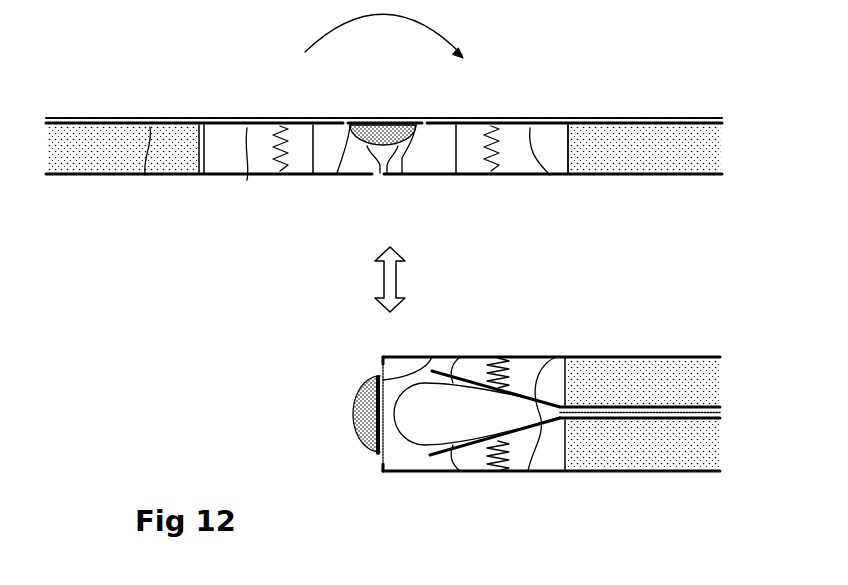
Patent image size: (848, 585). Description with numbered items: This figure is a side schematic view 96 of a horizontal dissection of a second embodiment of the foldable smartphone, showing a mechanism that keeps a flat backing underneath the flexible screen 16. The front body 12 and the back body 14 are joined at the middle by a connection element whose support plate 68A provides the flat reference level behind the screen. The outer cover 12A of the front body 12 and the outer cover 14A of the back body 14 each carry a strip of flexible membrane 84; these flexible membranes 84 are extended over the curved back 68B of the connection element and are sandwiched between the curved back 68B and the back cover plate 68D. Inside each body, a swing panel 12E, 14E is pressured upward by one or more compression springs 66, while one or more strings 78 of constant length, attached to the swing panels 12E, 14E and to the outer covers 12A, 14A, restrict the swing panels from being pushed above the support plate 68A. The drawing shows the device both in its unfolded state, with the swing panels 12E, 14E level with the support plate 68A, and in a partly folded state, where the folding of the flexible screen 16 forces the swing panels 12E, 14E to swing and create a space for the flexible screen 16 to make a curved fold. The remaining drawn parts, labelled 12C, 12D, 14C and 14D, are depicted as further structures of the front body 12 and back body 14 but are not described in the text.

The front body 12 is at (60, 177).
The outer cover 12A is at (93, 177).
The first jaw 12C is at (145, 175).
The first partition wall 12D is at (200, 177).
The swing panel 12E is at (247, 178).
The back body 14 is at (693, 178).
The outer cover 14A is at (640, 177).
The second jaw 14C is at (720, 418).
The second partition wall 14D is at (568, 148).
The swing panel 14E is at (550, 175).
The flexible screen 16 is at (228, 120).
The compression spring 66 is at (490, 165).
The support plate 68A is at (432, 357).
The curved back 68B is at (337, 173).
The back cover plate 68D is at (353, 414).
The string 78 is at (457, 148).
The flexible membrane 84 is at (362, 455).
The side schematic view 96 is at (288, 91).